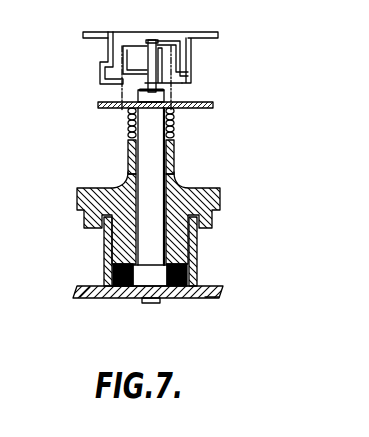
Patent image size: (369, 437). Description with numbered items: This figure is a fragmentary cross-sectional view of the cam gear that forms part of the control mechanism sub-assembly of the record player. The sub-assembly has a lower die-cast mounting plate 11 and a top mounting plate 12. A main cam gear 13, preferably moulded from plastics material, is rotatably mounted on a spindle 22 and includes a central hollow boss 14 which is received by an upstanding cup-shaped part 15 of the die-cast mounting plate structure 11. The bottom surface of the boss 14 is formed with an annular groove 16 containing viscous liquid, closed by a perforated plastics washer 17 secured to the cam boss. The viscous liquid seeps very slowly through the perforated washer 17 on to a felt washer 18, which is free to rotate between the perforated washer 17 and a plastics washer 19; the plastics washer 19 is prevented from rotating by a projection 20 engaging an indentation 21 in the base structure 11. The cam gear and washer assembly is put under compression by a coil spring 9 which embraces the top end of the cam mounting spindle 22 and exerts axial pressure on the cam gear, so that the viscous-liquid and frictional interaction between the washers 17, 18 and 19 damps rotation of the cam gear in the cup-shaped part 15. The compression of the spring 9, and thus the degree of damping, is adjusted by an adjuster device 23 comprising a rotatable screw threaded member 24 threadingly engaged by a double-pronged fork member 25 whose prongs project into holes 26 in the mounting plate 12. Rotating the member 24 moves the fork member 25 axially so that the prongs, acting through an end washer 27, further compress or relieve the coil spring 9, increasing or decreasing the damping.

The coil spring 9 is at (172, 132).
The lower die-cast mounting plate 11 is at (105, 292).
The top mounting plate 12 is at (108, 104).
The main cam gear 13 is at (214, 236).
The central hollow boss 14 is at (107, 252).
The cup-shaped part 15 is at (115, 275).
The annular groove 16 is at (194, 272).
The perforated plastics washer 17 is at (90, 291).
The felt washer 18 is at (119, 290).
The plastics washer 19 is at (152, 292).
The projection 20 is at (212, 298).
The indentation 21 is at (188, 294).
The spindle 22 is at (222, 193).
The adjuster device 23 is at (197, 73).
The rotatable screw threaded member 24 is at (190, 43).
The double-pronged fork member 25 is at (116, 68).
The holes 26 is at (127, 112).
The end washer 27 is at (126, 128).